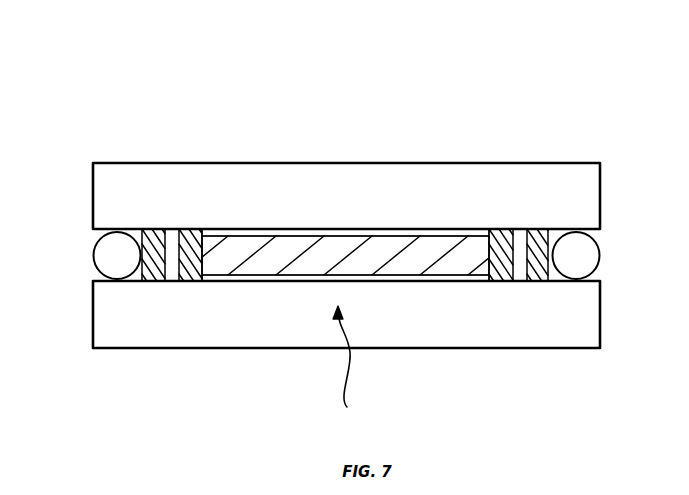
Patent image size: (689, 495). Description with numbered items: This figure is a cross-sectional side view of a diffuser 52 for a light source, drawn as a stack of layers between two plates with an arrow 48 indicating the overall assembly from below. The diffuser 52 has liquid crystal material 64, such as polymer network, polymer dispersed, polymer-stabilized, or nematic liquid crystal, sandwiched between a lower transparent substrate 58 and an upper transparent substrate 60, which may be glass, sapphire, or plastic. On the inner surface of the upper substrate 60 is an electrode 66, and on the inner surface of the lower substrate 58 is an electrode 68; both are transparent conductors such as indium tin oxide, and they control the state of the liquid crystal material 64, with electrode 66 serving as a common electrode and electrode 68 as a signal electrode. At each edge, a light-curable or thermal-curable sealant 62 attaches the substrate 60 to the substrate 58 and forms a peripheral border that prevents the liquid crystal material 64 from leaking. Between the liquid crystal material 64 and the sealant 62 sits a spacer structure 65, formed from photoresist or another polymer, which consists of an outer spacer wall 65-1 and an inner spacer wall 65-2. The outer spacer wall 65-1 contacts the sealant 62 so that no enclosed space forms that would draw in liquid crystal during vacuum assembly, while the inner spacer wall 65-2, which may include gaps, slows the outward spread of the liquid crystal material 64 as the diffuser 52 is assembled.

The sensor assembly 48 is at (337, 388).
The diffuser 52 is at (524, 83).
The substrate 58 is at (590, 308).
The substrate 60 is at (590, 194).
The sealant 62 is at (102, 252).
The liquid crystal material 64 is at (353, 250).
The spacer structure 65 is at (140, 288).
The outer spacer wall 65-1 is at (537, 281).
The inner spacer wall 65-2 is at (495, 281).
The electrode 66 is at (261, 231).
The electrode 68 is at (260, 276).